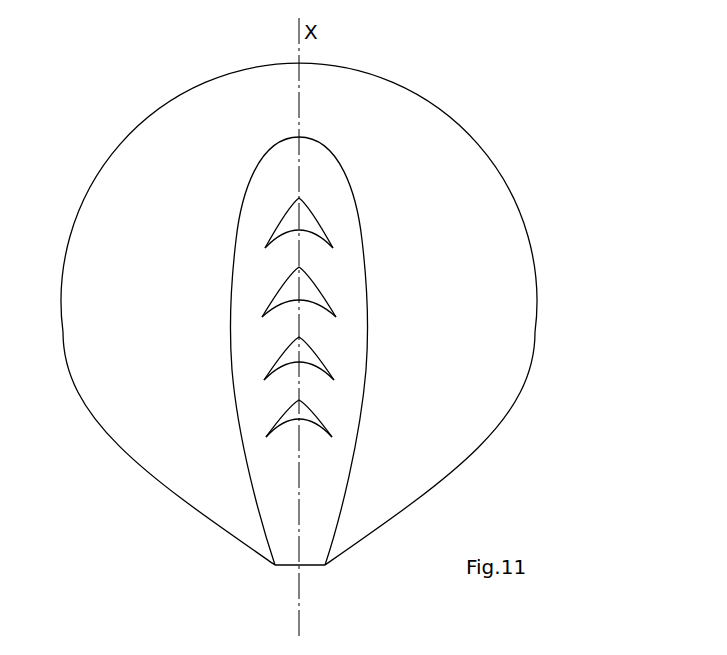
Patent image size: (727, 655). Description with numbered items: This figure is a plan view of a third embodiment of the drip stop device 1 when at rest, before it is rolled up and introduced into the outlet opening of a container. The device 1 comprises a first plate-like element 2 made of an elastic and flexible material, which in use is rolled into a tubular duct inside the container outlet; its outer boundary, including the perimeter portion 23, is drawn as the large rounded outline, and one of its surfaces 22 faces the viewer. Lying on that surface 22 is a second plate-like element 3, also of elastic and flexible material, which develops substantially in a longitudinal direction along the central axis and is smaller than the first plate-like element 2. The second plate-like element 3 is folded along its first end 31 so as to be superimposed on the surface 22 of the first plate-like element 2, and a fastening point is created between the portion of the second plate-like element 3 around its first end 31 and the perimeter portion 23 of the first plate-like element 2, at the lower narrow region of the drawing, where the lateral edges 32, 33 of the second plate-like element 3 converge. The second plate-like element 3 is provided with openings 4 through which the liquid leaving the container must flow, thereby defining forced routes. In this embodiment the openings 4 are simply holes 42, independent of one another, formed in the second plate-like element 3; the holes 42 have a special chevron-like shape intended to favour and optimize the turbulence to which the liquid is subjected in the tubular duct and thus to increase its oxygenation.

The drip stop device 1 is at (585, 90).
The first plate-like element 2 is at (494, 200).
The surface of the first plate-like element 22 is at (477, 401).
The perimeter portion of the first plate-like element 23 is at (257, 545).
The second plate-like element 3 is at (245, 236).
The first end of the second plate-like element 31 is at (285, 551).
The left edge of blade 32 is at (235, 263).
The right edge of blade 33 is at (366, 277).
The openings 4 is at (337, 295).
The holes 42 is at (279, 297).